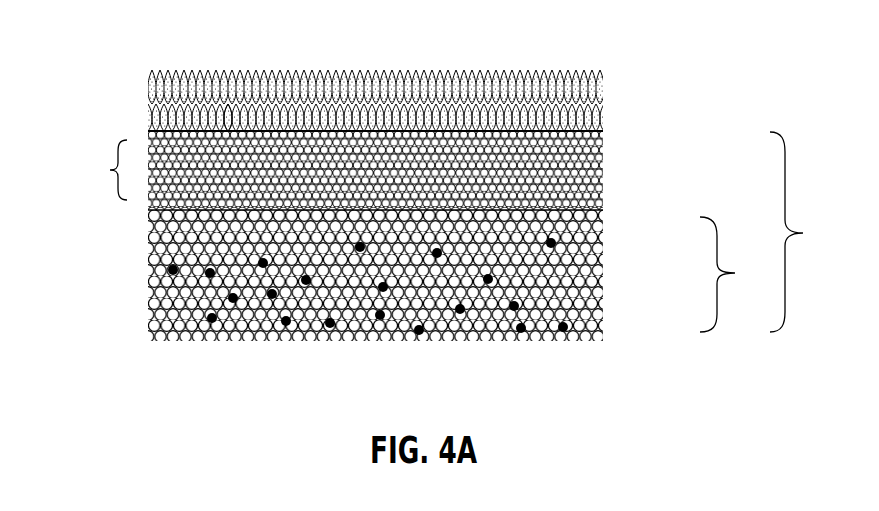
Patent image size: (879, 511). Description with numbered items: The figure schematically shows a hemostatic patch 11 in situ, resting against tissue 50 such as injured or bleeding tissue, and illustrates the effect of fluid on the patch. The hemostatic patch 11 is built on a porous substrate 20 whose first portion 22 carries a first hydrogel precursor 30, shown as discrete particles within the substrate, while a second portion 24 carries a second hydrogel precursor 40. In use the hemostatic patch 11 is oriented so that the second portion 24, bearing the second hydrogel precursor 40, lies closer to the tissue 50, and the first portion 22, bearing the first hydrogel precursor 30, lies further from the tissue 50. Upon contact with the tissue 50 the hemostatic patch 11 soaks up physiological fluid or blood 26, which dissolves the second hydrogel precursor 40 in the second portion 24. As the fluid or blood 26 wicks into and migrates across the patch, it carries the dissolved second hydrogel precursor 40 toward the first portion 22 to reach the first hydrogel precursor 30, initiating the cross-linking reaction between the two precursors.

The hemostatic patch 11 is at (800, 232).
The porous substrate 20 is at (603, 270).
The first portion 22 is at (732, 274).
The second portion 24 is at (103, 170).
The fluid or blood 26 is at (226, 112).
The first hydrogel precursor 30 is at (233, 298).
The second hydrogel precursor 40 is at (603, 165).
The tissue 50 is at (563, 90).